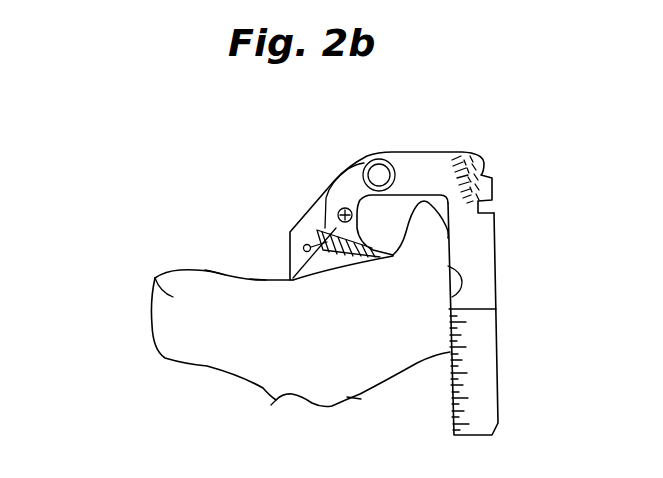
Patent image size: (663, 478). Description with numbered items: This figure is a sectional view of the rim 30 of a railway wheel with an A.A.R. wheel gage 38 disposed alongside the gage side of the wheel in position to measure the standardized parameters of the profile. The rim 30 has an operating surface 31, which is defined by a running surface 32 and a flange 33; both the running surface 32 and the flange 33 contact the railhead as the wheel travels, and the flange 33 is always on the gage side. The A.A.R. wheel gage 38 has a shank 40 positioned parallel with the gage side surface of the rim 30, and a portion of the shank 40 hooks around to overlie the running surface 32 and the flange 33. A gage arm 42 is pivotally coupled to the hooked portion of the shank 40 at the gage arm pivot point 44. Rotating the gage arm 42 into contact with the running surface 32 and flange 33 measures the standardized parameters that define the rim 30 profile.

The rim 30 is at (155, 278).
The operating surface 31 is at (258, 280).
The running surface 32 is at (218, 272).
The flange 33 is at (424, 212).
The A.A.R. wheel gage 38 is at (463, 142).
The shank 40 is at (495, 225).
The gage arm 42 is at (335, 180).
The gage arm pivot point 44 is at (380, 168).